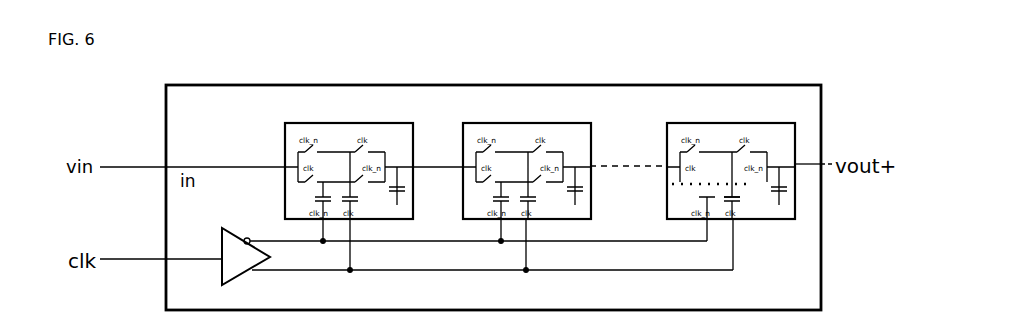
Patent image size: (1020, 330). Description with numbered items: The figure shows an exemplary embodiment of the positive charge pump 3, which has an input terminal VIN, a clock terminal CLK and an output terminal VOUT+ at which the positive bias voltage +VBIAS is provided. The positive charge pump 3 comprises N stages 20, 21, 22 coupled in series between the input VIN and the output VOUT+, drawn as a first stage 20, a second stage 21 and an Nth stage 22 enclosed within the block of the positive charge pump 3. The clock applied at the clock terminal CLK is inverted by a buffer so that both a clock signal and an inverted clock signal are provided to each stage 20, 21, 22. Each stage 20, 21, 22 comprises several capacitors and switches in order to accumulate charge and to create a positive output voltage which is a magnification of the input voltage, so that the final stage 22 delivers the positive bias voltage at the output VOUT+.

The positive charge pump 3 is at (432, 81).
The first stage 20 is at (298, 124).
The second stage 21 is at (473, 122).
The Nth stage 22 is at (678, 122).